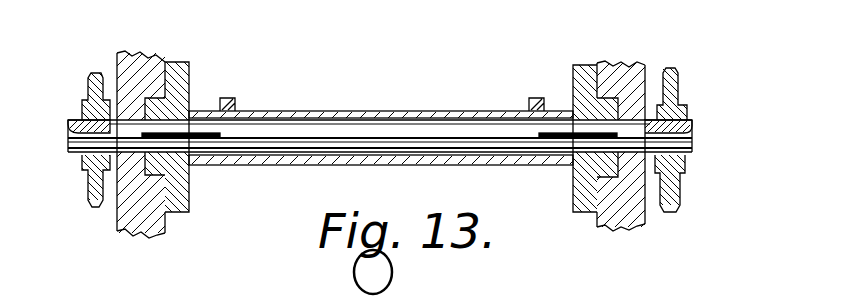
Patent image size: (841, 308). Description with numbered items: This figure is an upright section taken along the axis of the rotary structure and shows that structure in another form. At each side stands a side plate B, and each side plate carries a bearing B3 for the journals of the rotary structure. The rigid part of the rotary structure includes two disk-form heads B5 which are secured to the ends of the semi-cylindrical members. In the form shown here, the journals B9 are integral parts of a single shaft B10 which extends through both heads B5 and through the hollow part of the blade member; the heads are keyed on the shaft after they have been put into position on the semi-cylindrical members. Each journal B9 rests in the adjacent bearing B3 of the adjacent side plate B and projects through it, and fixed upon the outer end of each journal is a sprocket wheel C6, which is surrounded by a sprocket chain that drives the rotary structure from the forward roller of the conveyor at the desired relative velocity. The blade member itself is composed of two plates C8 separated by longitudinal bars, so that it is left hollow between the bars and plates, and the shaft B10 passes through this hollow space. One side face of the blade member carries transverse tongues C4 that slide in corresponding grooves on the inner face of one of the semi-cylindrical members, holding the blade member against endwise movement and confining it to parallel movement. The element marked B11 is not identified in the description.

The side plate B is at (152, 65).
The bearing B3 is at (133, 187).
The disk-form head B5 is at (190, 197).
The journal B9 is at (148, 98).
The shaft B10 is at (67, 138).
The axle B11 is at (378, 132).
The transverse tongue C4 is at (225, 100).
The sprocket wheel C6 is at (80, 112).
The plate C8 is at (322, 110).